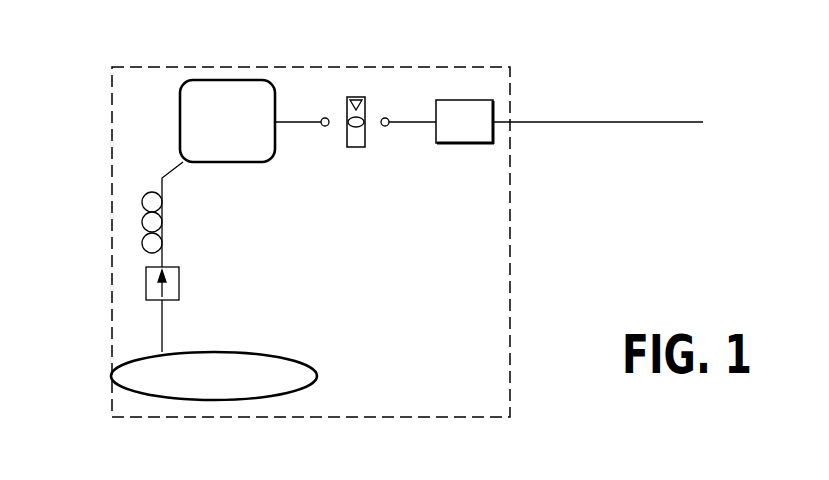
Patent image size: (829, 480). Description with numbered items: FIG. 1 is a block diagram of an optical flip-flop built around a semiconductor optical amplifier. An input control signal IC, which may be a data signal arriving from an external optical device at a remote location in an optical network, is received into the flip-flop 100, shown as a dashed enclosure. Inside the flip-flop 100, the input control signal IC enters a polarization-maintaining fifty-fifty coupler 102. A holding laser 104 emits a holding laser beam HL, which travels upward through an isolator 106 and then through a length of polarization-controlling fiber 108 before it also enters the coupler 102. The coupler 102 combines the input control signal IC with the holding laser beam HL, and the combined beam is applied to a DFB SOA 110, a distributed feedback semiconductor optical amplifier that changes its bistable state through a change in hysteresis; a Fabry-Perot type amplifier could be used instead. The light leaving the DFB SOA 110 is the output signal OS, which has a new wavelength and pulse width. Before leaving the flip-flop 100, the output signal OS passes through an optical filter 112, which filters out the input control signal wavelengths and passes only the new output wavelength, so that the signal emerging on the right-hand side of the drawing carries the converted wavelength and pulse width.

The flip-flop 100 is at (510, 326).
The polarization-maintaining 50/50 coupler 102 is at (268, 162).
The holding laser 104 is at (289, 353).
The isolator 106 is at (179, 274).
The polarization-controlling fiber 108 is at (160, 197).
The DFB SOA 110 is at (452, 35).
The optical filter 112 is at (458, 143).
The input control signal IC is at (127, 32).
The holding laser beam HL is at (162, 333).
The output signal OS is at (652, 124).